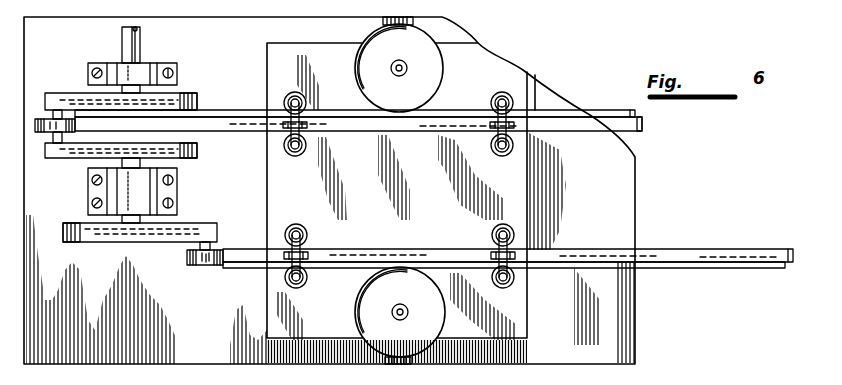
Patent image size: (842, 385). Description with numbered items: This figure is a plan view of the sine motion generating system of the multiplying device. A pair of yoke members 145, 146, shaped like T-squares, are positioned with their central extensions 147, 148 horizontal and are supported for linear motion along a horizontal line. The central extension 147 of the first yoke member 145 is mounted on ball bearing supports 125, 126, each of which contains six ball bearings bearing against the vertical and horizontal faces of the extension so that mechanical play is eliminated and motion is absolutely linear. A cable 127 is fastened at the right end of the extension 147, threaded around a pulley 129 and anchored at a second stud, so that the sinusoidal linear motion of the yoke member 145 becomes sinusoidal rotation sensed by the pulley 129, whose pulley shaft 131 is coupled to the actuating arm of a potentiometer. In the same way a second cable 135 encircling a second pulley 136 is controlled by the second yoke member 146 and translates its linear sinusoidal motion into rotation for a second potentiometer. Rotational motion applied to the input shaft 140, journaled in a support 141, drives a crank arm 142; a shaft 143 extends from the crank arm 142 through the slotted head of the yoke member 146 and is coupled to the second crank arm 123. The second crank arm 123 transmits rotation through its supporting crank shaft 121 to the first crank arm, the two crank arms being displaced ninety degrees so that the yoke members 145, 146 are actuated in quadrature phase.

The crank shaft 121 is at (143, 218).
The second crank arm 123 is at (93, 158).
The ball bearing support 125 is at (310, 243).
The ball bearing support 126 is at (493, 242).
The cable 127 is at (692, 268).
The pulley 129 is at (420, 347).
The pulley shaft 131 is at (393, 312).
The second cable 135 is at (622, 86).
The second pulley 136 is at (433, 77).
The input shaft 140 is at (140, 37).
The support 141 is at (155, 63).
The crank arm 142 is at (60, 100).
The shaft 143 is at (50, 137).
The yoke member 145 is at (205, 265).
The yoke member 146 is at (220, 128).
The central extension 147 is at (758, 248).
The central extension 148 is at (642, 122).